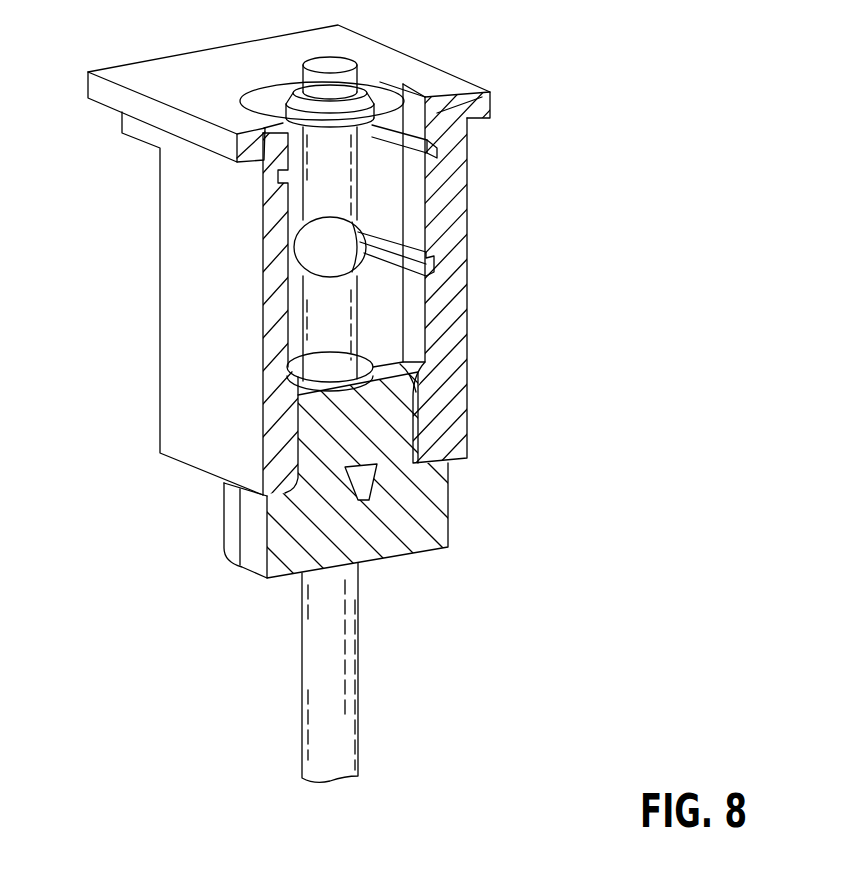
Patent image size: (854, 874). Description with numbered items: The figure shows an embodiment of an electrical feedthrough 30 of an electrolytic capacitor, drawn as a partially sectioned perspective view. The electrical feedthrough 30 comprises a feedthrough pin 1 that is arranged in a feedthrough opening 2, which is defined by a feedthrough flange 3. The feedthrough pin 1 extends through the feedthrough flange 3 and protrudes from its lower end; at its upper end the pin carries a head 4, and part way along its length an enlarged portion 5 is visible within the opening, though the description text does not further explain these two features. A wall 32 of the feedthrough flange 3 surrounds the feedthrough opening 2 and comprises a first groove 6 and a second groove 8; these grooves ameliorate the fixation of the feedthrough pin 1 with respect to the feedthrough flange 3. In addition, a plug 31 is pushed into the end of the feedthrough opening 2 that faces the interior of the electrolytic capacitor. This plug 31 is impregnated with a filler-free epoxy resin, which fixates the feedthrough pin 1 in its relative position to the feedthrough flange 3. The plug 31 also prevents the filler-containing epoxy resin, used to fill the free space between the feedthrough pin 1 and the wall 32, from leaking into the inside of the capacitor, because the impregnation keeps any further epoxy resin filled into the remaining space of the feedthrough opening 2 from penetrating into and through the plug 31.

The feedthrough pin 1 is at (335, 185).
The feedthrough opening 2 is at (394, 108).
The feedthrough flange 3 is at (443, 342).
The pin head 4 is at (300, 98).
The ball 5 is at (337, 231).
The first groove 6 is at (427, 261).
The second groove 8 is at (437, 148).
The electrical feedthrough 30 is at (114, 312).
The plug 31 is at (422, 530).
The wall 32 is at (413, 292).